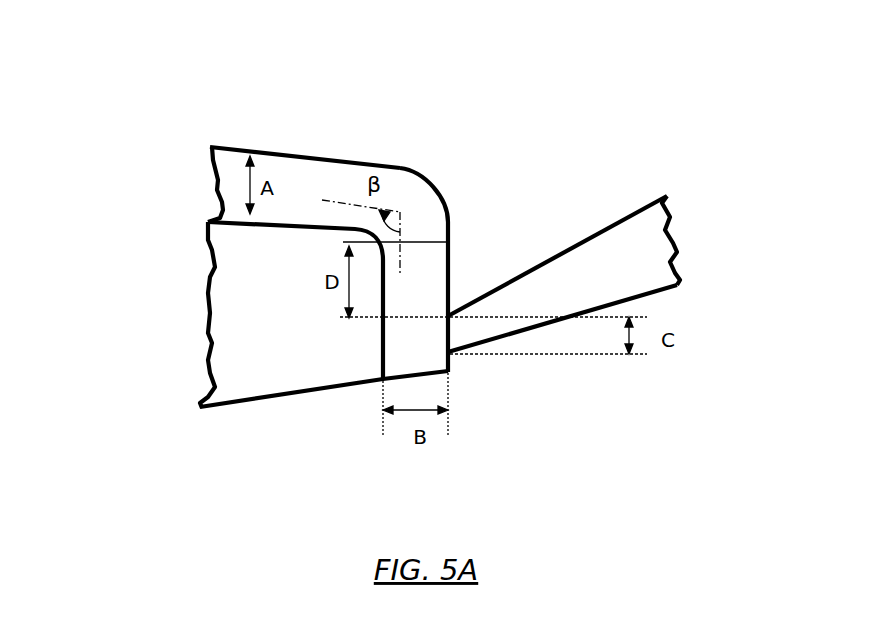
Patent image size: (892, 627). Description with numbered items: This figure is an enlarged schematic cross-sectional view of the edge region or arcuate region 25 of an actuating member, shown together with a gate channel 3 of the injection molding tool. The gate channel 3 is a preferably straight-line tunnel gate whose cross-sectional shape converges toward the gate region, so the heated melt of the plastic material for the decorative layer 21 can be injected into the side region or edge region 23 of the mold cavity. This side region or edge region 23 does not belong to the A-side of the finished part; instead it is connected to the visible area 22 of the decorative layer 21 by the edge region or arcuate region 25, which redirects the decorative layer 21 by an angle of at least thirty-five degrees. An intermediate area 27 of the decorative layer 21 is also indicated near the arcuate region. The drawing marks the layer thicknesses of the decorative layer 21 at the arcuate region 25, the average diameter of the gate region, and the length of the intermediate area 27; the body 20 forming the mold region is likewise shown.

The gate channel 3 is at (613, 274).
The holder 20 is at (371, 212).
The decorative layer 21 is at (452, 194).
The visible area 22 is at (283, 172).
The side region or edge region 23 is at (448, 295).
The edge region or arcuate region 25 is at (428, 130).
The intermediate area 27 is at (392, 290).